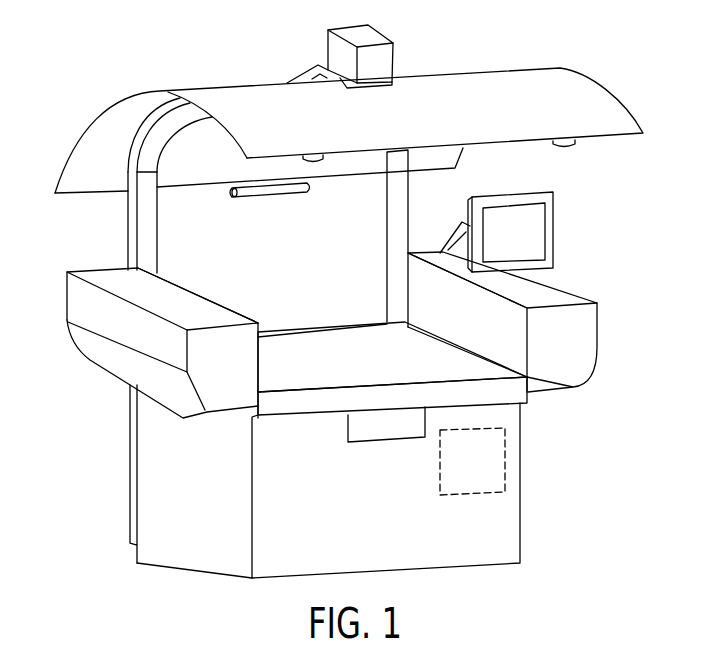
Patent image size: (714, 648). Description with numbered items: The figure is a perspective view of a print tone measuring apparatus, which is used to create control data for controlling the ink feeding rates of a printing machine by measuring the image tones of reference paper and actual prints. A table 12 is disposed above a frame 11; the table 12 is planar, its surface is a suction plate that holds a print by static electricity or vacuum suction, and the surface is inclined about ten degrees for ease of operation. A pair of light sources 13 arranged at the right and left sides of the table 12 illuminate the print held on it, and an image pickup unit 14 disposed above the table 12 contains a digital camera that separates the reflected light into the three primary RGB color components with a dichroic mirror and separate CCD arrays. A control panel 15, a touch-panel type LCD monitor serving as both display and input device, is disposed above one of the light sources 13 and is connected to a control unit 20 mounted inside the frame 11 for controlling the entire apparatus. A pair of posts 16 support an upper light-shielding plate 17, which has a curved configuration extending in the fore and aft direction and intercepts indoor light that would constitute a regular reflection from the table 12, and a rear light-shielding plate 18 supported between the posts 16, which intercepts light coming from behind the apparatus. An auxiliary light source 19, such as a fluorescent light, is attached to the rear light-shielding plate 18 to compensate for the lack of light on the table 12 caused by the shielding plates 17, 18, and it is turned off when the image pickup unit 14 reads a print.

The frame 11 is at (507, 527).
The table 12 is at (347, 370).
The light sources 13 is at (140, 338).
The image pickup unit 14 is at (380, 65).
The control panel 15 is at (533, 237).
The posts 16 is at (143, 200).
The upper light-shielding plate 17 is at (508, 85).
The rear light-shielding plate 18 is at (178, 267).
The auxiliary light source 19 is at (283, 190).
The control unit 20 is at (485, 457).